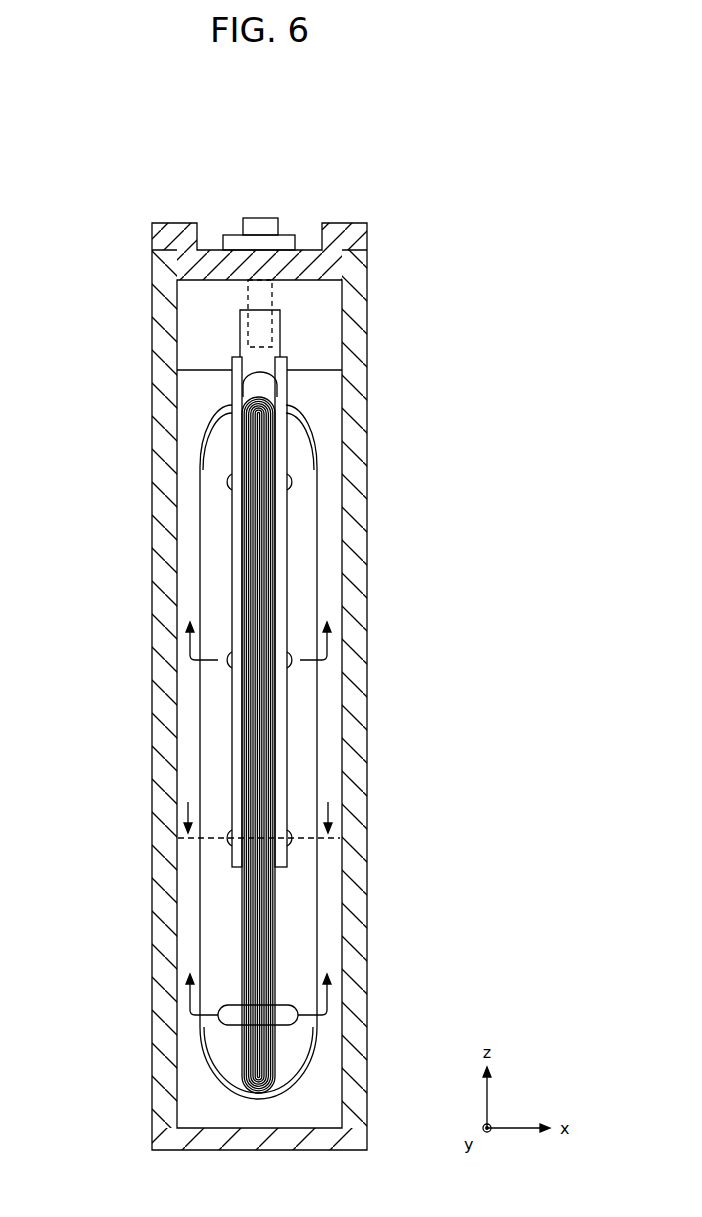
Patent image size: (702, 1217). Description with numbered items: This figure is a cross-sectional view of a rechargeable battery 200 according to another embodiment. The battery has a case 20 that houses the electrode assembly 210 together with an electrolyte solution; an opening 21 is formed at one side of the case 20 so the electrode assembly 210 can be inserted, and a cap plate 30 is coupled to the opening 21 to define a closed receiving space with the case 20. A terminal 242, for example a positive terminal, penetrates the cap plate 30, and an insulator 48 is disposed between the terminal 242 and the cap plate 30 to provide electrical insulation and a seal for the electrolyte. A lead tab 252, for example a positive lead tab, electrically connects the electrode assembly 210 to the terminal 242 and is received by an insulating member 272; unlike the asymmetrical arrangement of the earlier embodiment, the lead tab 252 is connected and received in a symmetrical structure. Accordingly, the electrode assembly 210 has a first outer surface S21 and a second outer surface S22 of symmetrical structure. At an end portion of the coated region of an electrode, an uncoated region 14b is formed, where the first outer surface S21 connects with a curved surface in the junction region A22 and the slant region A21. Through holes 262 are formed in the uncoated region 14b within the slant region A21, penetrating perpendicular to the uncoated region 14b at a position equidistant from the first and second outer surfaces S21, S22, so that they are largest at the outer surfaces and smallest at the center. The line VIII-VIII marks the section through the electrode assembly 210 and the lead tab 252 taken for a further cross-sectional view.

The rechargeable battery 200 is at (233, 137).
The case 20 is at (362, 415).
The opening 21 is at (185, 247).
The cap plate 30 is at (335, 228).
The insulator 48 is at (248, 240).
The terminal 242 is at (273, 222).
The insulating member 272 is at (220, 305).
The lead tab 252 is at (280, 460).
The through holes 262 is at (300, 652).
The slant region A21 is at (220, 698).
The junction region A22 is at (265, 755).
The uncoated region 14b is at (365, 745).
The electrode assembly 210 is at (199, 1062).
The first outer surface S21 is at (320, 912).
The second outer surface S22 is at (200, 912).
The line VIII- VIII is at (259, 807).